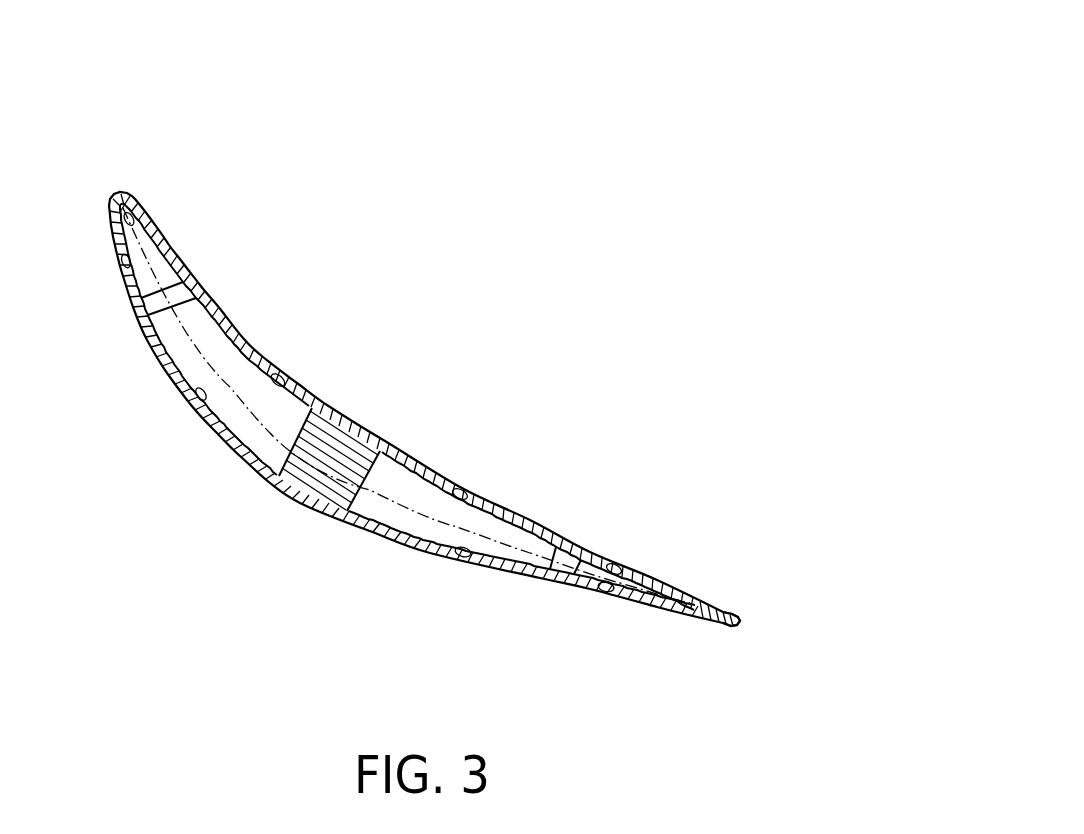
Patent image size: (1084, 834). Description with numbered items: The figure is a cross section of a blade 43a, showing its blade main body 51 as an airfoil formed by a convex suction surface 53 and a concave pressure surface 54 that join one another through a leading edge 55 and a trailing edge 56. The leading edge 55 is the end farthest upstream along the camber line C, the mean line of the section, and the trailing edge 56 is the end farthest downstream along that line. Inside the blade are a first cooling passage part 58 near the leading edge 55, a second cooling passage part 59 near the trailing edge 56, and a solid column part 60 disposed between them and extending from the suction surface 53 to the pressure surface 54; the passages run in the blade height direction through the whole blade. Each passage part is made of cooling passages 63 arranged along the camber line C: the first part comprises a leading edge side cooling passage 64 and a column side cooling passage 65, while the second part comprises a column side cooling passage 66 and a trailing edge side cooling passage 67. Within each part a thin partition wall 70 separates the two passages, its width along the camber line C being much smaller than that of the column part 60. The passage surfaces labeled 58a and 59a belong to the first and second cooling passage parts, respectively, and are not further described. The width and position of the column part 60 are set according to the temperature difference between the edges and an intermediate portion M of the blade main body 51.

The blade main body 51 is at (424, 328).
The blade 43a is at (424, 409).
The convex suction surface 53 is at (327, 470).
The concave pressure surface 54 is at (314, 403).
The leading edge 55 is at (112, 195).
The trailing edge 56 is at (745, 622).
The first cooling passage part 58 is at (271, 287).
The inner surface of first hollow portion 58a is at (135, 214).
The second cooling passage part 59 is at (544, 494).
The inner surface of second hollow portion 59a is at (465, 490).
The column part 60 is at (328, 478).
The cooling passage 63 is at (424, 357).
The leading edge side cooling passage 64 is at (153, 220).
The column side cooling passage 65 is at (206, 310).
The column side cooling passage 66 is at (507, 507).
The trailing edge side cooling passage 67 is at (594, 566).
The partition wall 70 is at (172, 283).
The camber line C is at (204, 360).
The intermediate portion M is at (372, 437).